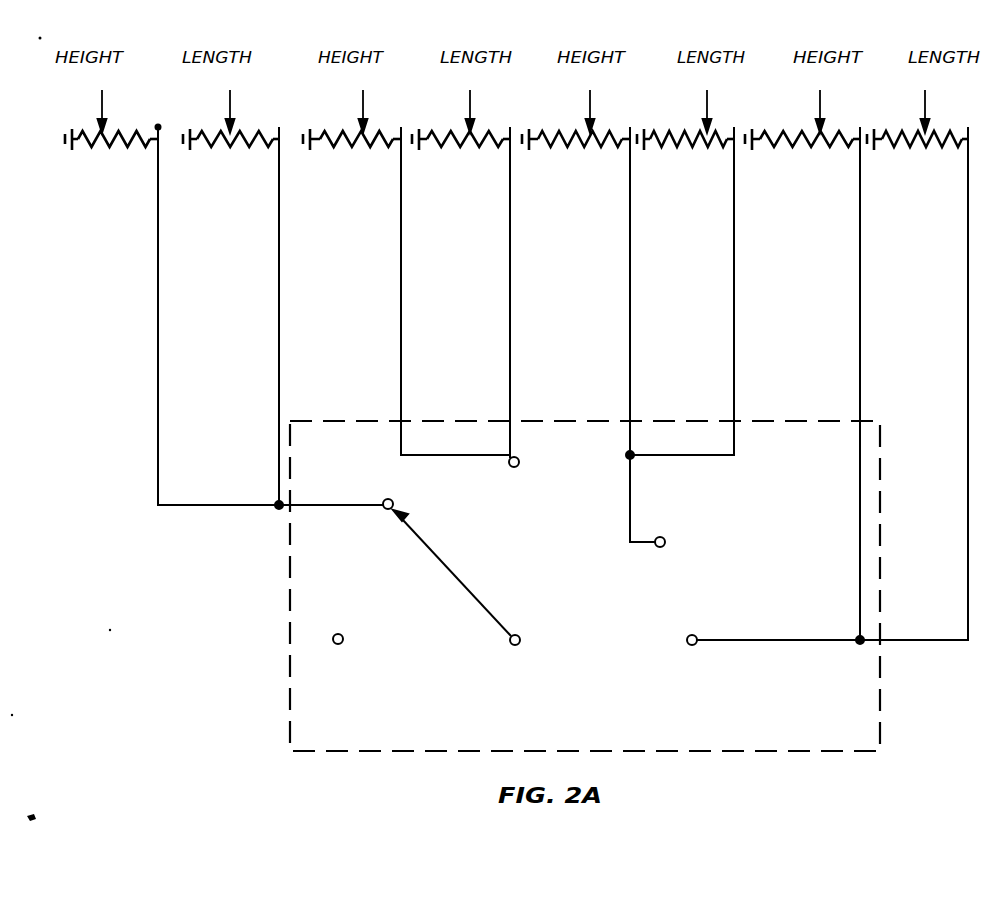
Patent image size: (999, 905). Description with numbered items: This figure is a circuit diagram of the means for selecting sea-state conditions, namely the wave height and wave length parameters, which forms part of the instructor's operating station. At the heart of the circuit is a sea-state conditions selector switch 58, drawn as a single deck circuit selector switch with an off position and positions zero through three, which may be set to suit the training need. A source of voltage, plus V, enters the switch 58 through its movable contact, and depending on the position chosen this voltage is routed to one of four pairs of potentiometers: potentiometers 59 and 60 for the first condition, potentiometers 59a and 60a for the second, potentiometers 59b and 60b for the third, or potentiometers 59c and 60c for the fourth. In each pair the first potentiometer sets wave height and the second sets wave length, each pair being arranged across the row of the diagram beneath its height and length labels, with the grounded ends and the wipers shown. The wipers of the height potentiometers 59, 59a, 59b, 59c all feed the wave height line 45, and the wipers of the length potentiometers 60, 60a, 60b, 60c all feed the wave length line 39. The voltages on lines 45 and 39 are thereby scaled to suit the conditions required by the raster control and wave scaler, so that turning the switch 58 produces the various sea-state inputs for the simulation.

The wave height line 45 is at (102, 97).
The wave length line 39 is at (230, 99).
The potentiometer 59 is at (82, 156).
The potentiometer 60 is at (215, 156).
The potentiometer 59a is at (351, 157).
The potentiometer 60a is at (455, 157).
The potentiometer 59b is at (592, 157).
The potentiometer 60b is at (706, 157).
The potentiometer 59c is at (826, 157).
The potentiometer 60c is at (922, 157).
The sea-state conditions selector switch 58 is at (881, 699).